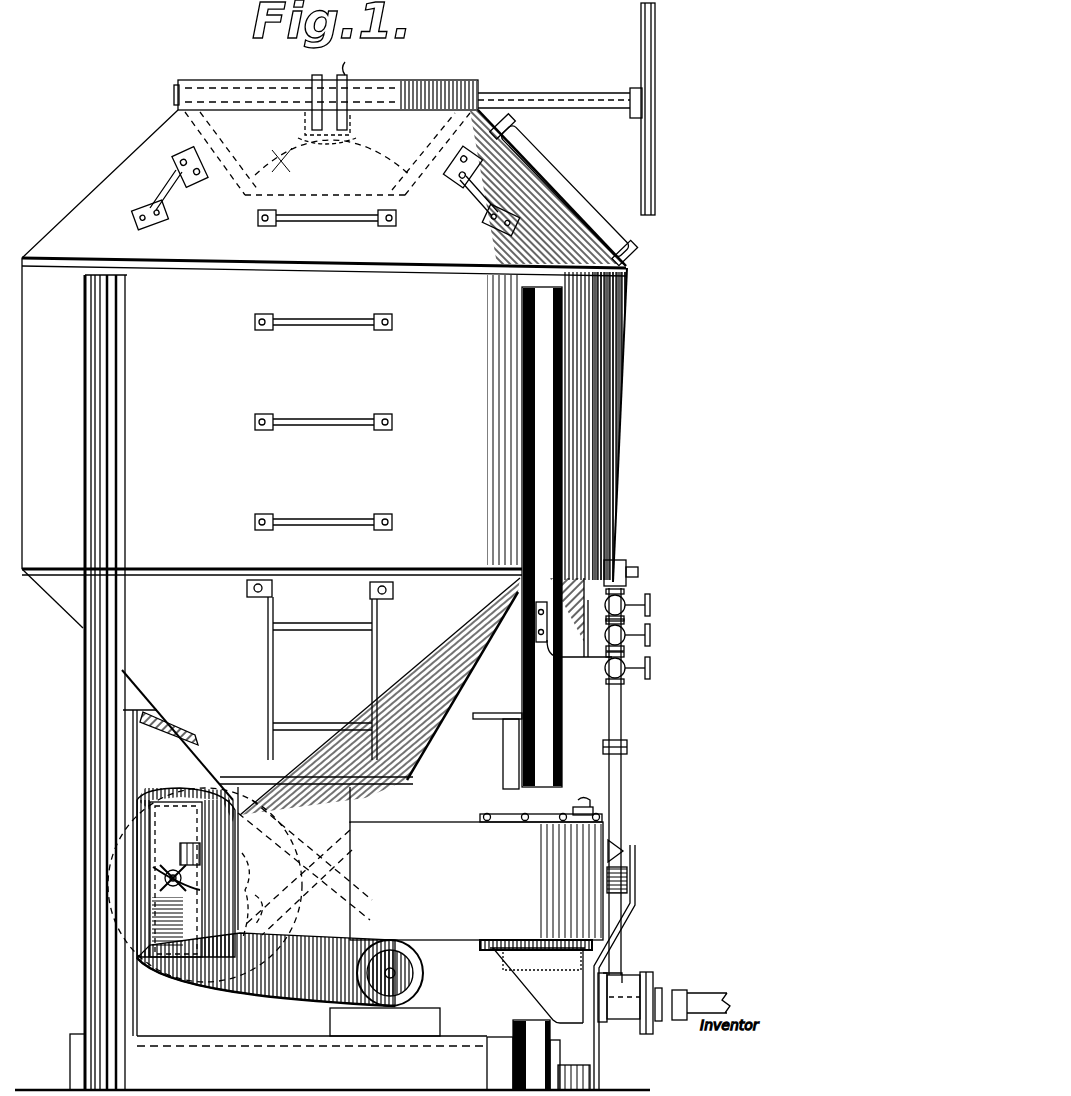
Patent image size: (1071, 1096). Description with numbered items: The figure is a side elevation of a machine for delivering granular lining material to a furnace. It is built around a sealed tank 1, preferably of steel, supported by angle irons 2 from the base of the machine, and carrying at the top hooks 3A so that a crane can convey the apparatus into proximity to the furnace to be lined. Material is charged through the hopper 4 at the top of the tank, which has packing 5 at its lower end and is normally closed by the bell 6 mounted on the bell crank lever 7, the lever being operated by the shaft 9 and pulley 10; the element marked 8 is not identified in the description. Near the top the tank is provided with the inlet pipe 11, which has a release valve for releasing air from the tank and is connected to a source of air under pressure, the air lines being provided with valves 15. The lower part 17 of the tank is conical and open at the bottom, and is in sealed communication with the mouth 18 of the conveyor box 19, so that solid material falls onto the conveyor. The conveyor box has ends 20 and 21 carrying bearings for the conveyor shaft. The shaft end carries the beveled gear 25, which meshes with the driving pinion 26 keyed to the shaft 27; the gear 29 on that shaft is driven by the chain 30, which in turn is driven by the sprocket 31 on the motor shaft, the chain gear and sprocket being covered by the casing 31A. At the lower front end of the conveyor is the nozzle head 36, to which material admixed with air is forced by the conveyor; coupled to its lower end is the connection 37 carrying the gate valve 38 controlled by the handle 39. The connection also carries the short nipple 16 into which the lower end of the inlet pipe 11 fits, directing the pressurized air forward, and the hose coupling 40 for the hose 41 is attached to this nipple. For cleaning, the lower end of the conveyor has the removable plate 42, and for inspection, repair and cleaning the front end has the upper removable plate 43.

The sealed tank 1 is at (590, 375).
The angle irons 2 is at (83, 773).
The hooks 3A is at (173, 172).
The hopper 4 is at (440, 84).
The packing 5 is at (414, 196).
The bell 6 is at (297, 170).
The bell crank lever 7 is at (328, 75).
The bracket piece 8 is at (357, 83).
The shaft 9 is at (549, 100).
The pulley 10 is at (655, 43).
The inlet pipe 11 is at (598, 155).
The valves 15 is at (650, 655).
The nipple 16 is at (627, 992).
The lower part of the tank 17 is at (177, 732).
The mouth of the conveyor box 18 is at (423, 790).
The conveyor box 19 is at (428, 832).
The end of the conveyor box 20 is at (207, 887).
The end of the conveyor box 21 is at (612, 838).
The beveled gear 25 is at (253, 913).
The driving pinion 26 is at (176, 878).
The shaft 27 is at (160, 877).
The gear 29 is at (72, 842).
The chain 30 is at (307, 888).
The sprocket 31 is at (382, 1030).
The casing 31A is at (167, 783).
The nozzle head 36 is at (540, 953).
The connection 37 is at (620, 1027).
The gate valve 38 is at (598, 1068).
The handle 39 is at (637, 852).
The hose coupling 40 is at (652, 975).
The hose 41 is at (710, 997).
The removable plate 42 is at (360, 927).
The upper removable plate 43 is at (573, 822).